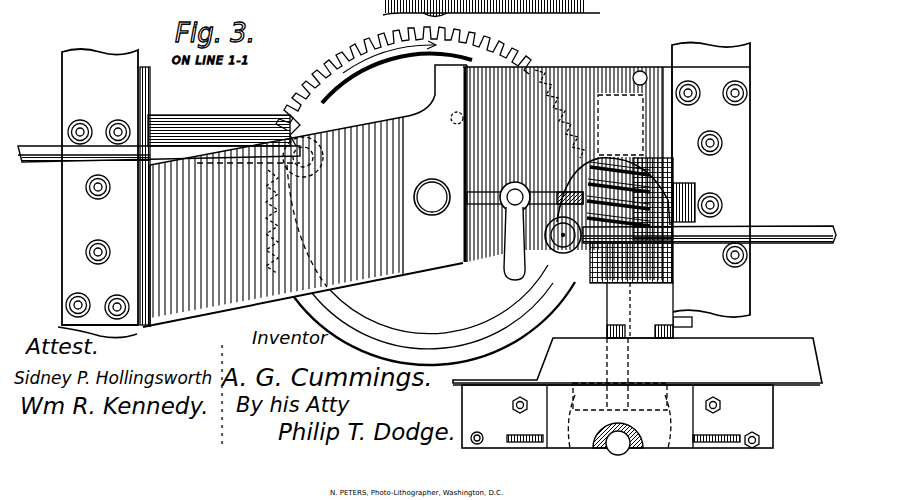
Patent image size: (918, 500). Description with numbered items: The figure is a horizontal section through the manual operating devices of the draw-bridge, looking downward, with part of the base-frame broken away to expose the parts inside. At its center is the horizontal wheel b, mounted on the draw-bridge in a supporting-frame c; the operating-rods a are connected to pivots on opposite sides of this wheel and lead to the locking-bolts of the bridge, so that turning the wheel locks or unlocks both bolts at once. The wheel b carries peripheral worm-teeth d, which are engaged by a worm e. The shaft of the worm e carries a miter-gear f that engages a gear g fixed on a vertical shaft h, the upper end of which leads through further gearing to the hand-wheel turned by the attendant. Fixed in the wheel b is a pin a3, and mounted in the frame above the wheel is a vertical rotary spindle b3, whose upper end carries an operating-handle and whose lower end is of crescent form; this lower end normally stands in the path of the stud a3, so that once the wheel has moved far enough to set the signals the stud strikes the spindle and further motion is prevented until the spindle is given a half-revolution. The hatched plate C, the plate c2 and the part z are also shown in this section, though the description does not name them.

The operating-rods a is at (37, 158).
The pin a3 is at (455, 124).
The horizontal wheel b is at (362, 215).
The vertical rotary spindle b3 is at (560, 186).
The supporting-frame c is at (260, 193).
The hatched plate C is at (606, 175).
The right plate c2 is at (711, 185).
The peripheral worm-teeth d is at (403, 78).
The worm e is at (626, 247).
The miter-gear f is at (645, 396).
The gear g is at (580, 424).
The vertical shaft h is at (640, 441).
The handle z is at (515, 281).